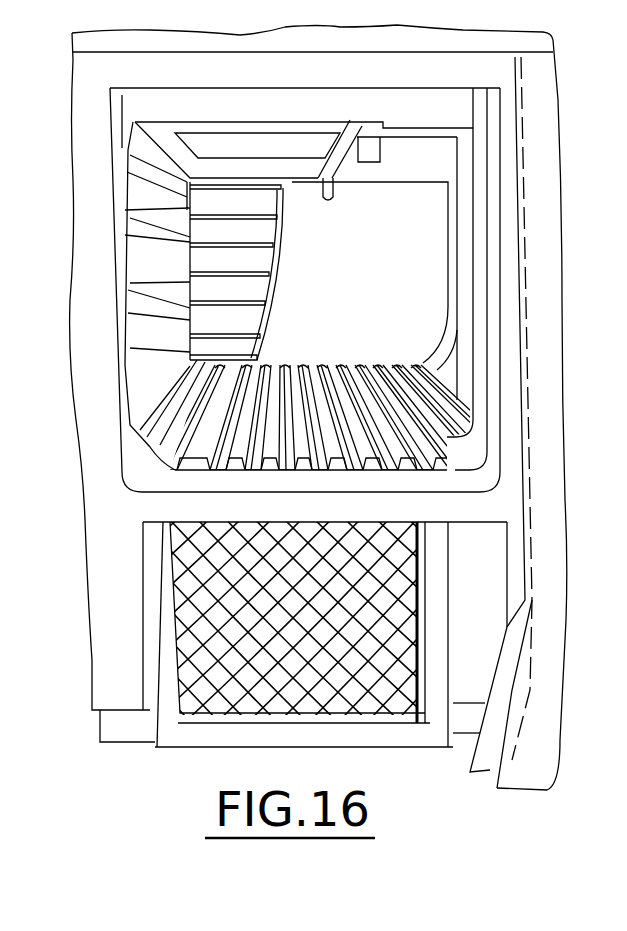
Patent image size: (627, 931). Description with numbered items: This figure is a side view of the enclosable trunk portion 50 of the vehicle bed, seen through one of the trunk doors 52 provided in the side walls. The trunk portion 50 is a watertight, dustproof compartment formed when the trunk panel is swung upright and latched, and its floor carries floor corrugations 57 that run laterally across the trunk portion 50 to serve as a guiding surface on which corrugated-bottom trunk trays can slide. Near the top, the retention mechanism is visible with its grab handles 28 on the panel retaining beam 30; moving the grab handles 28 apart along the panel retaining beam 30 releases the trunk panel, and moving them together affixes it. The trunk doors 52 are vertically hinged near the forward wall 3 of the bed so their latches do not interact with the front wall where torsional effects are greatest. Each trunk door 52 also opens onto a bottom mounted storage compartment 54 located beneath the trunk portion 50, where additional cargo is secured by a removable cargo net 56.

The forward wall 3 is at (140, 195).
The grab handles 28 is at (374, 153).
The panel retaining beam 30 is at (345, 165).
The trunk portion 50 is at (420, 270).
The trunk doors 52 is at (243, 262).
The bottom mounted storage compartment 54 is at (410, 642).
The removable cargo net 56 is at (368, 567).
The floor corrugations 57 is at (458, 468).